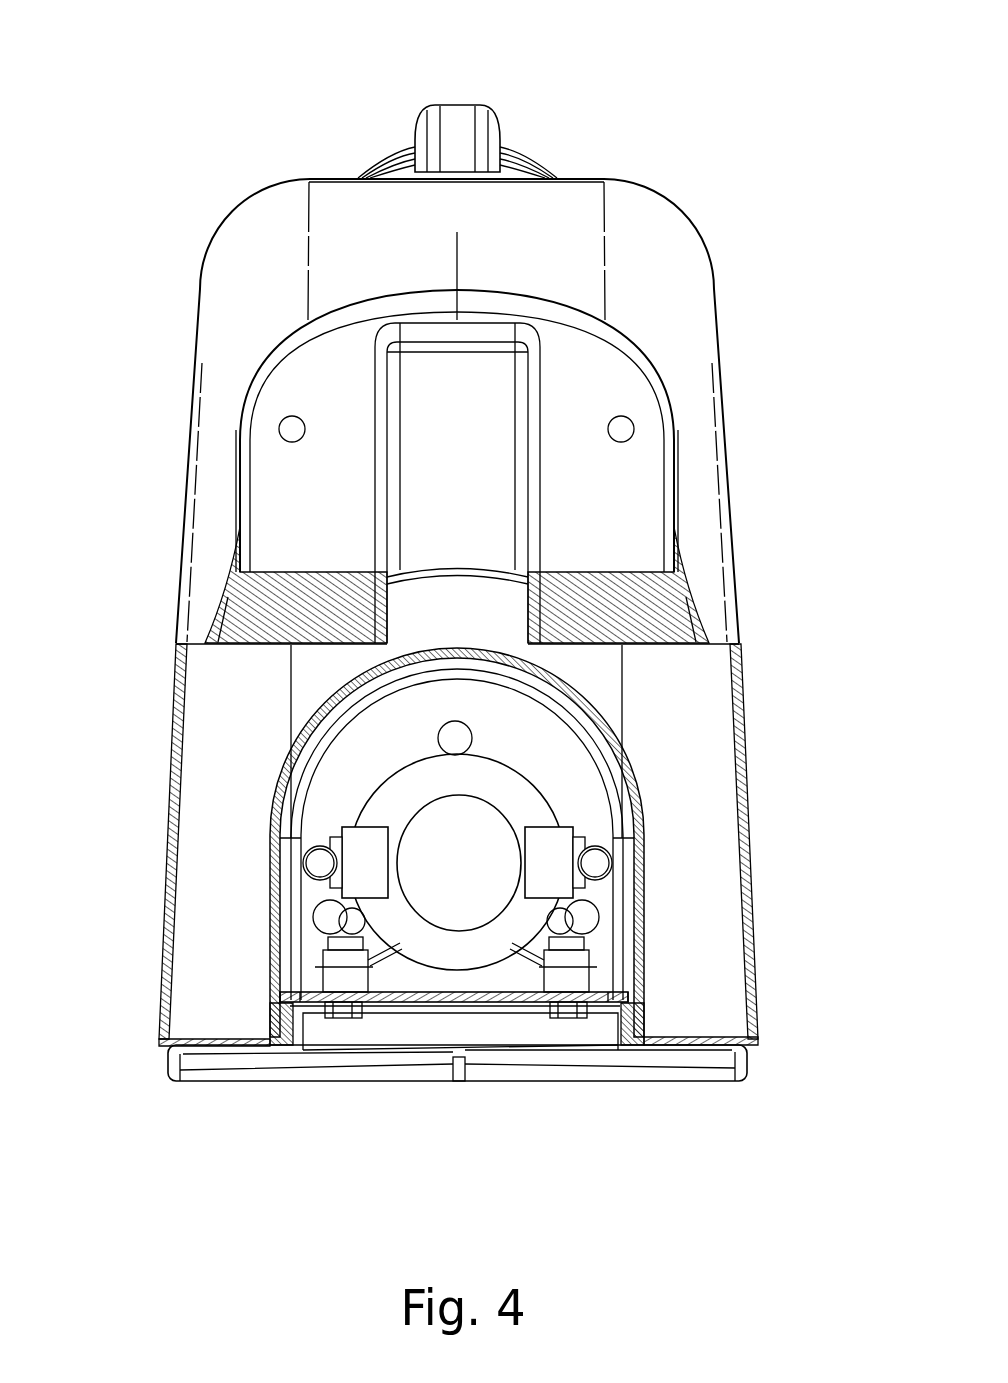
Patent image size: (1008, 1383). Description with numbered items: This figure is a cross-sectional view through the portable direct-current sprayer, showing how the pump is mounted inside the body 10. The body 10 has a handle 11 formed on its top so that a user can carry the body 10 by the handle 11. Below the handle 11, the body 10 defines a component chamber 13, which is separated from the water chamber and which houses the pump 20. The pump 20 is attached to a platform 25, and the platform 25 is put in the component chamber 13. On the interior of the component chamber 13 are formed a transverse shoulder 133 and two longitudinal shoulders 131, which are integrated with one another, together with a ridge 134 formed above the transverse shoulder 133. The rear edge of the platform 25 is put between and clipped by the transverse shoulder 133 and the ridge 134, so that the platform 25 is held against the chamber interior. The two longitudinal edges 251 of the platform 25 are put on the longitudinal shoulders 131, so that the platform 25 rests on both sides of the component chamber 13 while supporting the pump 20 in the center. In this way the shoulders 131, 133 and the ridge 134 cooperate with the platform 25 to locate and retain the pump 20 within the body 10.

The body 10 is at (700, 532).
The handle 11 is at (456, 120).
The component chamber 13 is at (340, 715).
The longitudinal shoulders 131 is at (293, 1018).
The transverse shoulder 133 is at (429, 1027).
The ridge 134 is at (392, 978).
The pump 20 is at (517, 800).
The platform 25 is at (484, 995).
The longitudinal edges 251 is at (297, 997).